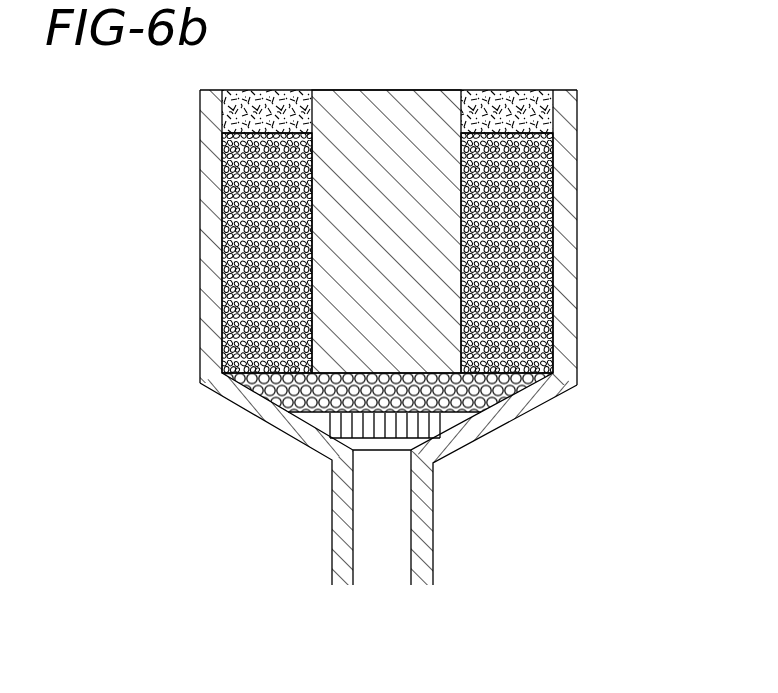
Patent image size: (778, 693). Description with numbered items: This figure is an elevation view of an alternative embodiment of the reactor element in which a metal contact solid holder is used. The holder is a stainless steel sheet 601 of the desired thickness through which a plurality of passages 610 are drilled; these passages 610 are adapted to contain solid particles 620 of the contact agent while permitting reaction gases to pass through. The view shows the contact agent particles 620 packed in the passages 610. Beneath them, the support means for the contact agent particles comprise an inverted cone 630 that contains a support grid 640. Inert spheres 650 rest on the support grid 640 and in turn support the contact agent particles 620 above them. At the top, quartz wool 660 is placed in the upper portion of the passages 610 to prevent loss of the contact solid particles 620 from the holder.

The stainless steel sheet 601 is at (384, 100).
The passages 610 is at (229, 257).
The solid particles of the contact agent 620 is at (221, 199).
The inverted cone 630 is at (522, 414).
The support grid 640 is at (325, 426).
The inert spheres 650 is at (268, 400).
The quartz wool 660 is at (265, 103).